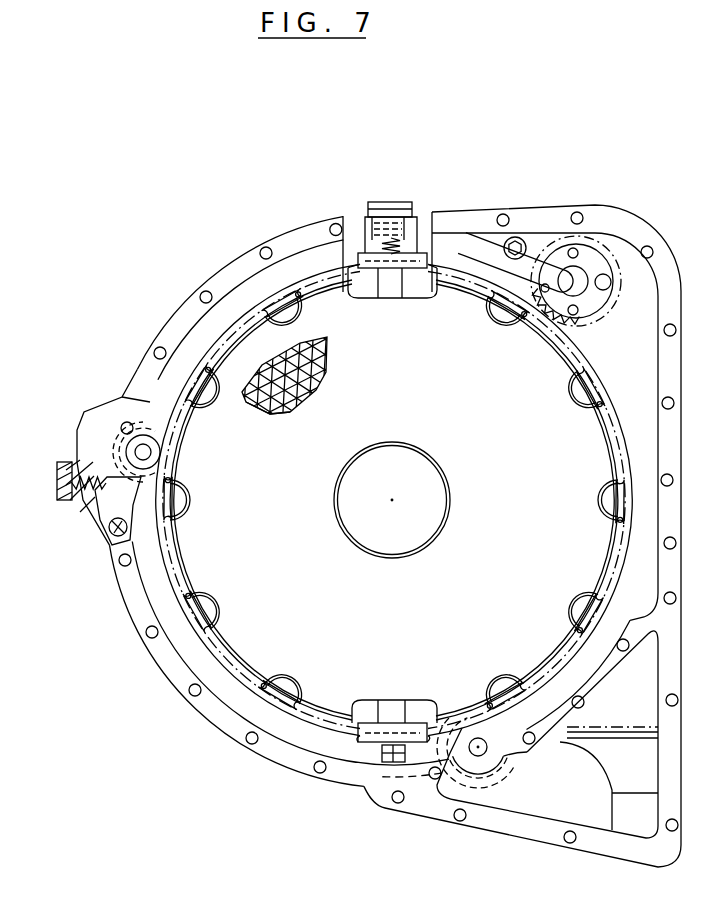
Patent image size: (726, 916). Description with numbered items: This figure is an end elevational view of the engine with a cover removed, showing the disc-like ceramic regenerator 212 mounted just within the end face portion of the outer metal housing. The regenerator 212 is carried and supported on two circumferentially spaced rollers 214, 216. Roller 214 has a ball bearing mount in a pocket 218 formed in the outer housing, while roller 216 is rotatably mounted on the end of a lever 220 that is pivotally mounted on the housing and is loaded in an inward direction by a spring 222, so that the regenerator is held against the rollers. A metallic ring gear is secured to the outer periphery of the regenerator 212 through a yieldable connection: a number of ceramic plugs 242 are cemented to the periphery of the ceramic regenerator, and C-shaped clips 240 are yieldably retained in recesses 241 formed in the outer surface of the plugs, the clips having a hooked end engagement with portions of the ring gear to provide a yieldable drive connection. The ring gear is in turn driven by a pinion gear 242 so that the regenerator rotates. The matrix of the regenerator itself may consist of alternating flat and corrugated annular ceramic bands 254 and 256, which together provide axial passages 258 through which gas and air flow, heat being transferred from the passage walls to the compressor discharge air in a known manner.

The regenerator 212 is at (392, 620).
The roller 214 is at (462, 742).
The roller 216 is at (160, 454).
The pocket 218 is at (507, 793).
The lever 220 is at (130, 510).
The spring 222 is at (93, 512).
The C-shaped clips 240 is at (507, 697).
The recesses 241 is at (178, 500).
The ceramic plugs 242 is at (300, 313).
The flat annular ceramic bands 254 is at (318, 378).
The corrugated annular ceramic bands 256 is at (323, 350).
The axial passages 258 is at (282, 403).